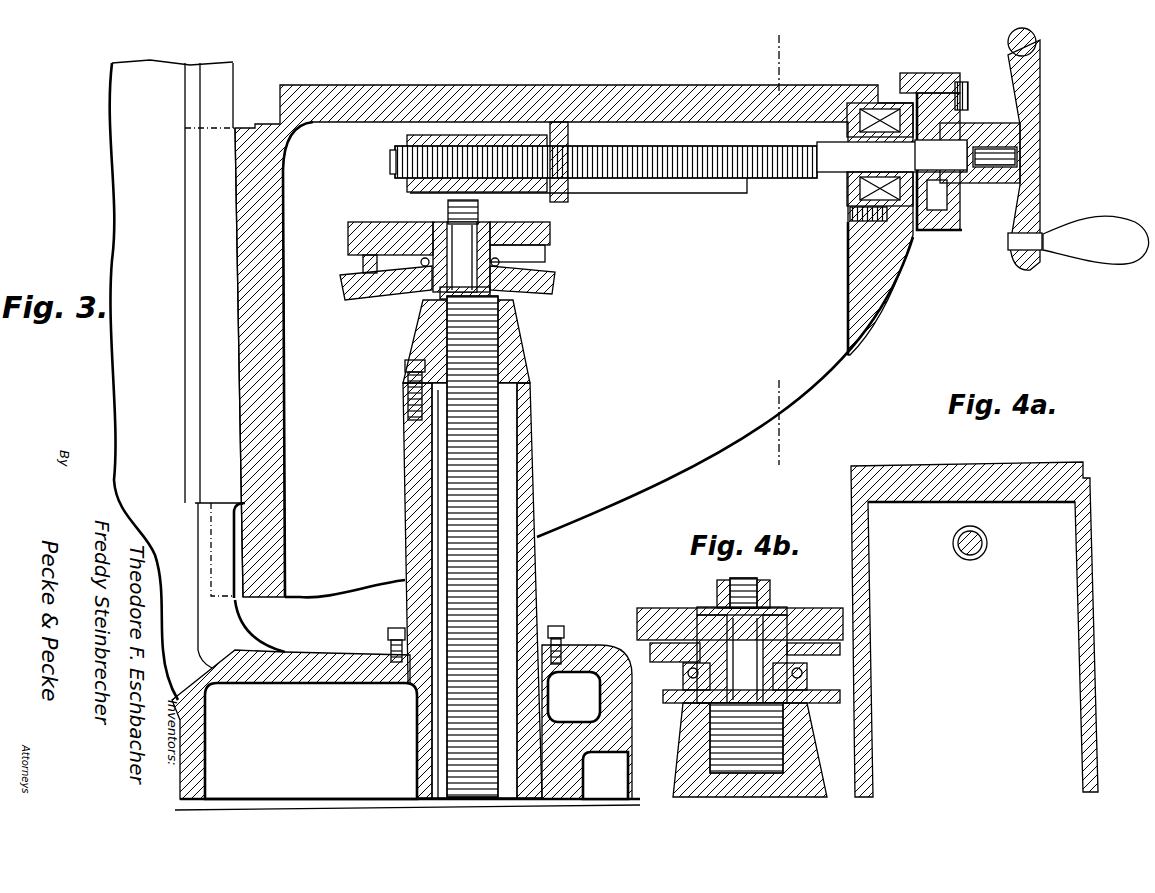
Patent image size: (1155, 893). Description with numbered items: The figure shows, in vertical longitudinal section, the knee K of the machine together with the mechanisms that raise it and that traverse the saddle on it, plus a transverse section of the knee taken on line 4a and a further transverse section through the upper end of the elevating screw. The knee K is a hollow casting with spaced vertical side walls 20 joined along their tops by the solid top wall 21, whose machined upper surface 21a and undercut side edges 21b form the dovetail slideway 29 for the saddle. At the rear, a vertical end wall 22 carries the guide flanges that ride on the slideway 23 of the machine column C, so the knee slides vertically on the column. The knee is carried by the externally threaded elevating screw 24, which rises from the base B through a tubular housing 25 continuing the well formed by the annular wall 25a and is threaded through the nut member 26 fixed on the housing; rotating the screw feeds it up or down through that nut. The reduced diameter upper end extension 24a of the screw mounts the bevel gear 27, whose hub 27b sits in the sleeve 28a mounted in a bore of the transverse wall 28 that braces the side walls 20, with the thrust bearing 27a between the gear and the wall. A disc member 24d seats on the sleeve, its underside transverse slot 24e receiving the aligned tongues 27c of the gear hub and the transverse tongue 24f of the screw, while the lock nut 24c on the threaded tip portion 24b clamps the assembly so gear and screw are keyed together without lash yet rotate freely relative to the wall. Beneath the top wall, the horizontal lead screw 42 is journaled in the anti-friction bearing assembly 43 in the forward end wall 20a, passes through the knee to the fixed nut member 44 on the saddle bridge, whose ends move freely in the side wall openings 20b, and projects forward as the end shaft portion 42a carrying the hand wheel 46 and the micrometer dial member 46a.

In FIG. 3, the side walls 20 is at (800, 395).
In FIG. 4A, the side walls 20 is at (1085, 562).
In FIG. 3, the forward end wall 20a is at (873, 325).
In FIG. 3, the side wall openings 20b is at (748, 200).
In FIG. 3, the top wall 21 is at (788, 95).
In FIG. 4A, the top wall 21 is at (980, 505).
In FIG. 3, the upper surface 21a is at (635, 88).
In FIG. 4A, the upper surface 21a is at (1004, 464).
In FIG. 3, the undercut side edges 21b is at (813, 482).
In FIG. 4A, the undercut side edges 21b is at (1086, 470).
In FIG. 4B, the undercut side edges 21b is at (795, 632).
In FIG. 3, the end wall 22 is at (290, 370).
In FIG. 3, the slideway 23 is at (213, 97).
In FIG. 3, the elevating screw 24 is at (482, 482).
In FIG. 4B, the elevating screw 24 is at (735, 768).
In FIG. 3, the reduced diameter upper end extension 24a is at (500, 262).
In FIG. 4B, the reduced diameter upper end extension 24a is at (805, 708).
In FIG. 3, the threaded tip portion 24b is at (447, 212).
In FIG. 4B, the threaded tip portion 24b is at (735, 580).
In FIG. 3, the lock nut 24c is at (440, 235).
In FIG. 4B, the lock nut 24c is at (745, 655).
In FIG. 3, the disc member 24d is at (540, 222).
In FIG. 4B, the disc member 24d is at (775, 612).
In FIG. 4B, the transverse slot 24e is at (725, 612).
In FIG. 3, the transverse tongue 24f is at (440, 294).
In FIG. 3, the tubular housing 25 is at (532, 514).
In FIG. 3, the annular wall 25a is at (417, 732).
In FIG. 3, the nut member 26 is at (512, 338).
In FIG. 3, the bevel gear 27 is at (540, 280).
In FIG. 4B, the bevel gear 27 is at (685, 708).
In FIG. 3, the thrust bearing 27a is at (400, 276).
In FIG. 3, the hub 27b is at (548, 245).
In FIG. 4B, the hub 27b is at (745, 652).
In FIG. 4B, the tongues 27c is at (700, 625).
In FIG. 3, the transverse wall 28 is at (548, 230).
In FIG. 3, the sleeve 28a is at (350, 252).
In FIG. 4B, the sleeve 28a is at (645, 618).
In FIG. 3, the slideway 29 is at (712, 92).
In FIG. 3, the lead screw 42 is at (760, 176).
In FIG. 3, the end shaft portion 42a is at (960, 185).
In FIG. 3, the anti-friction bearing assembly 43 is at (910, 225).
In FIG. 3, the nut member 44 is at (482, 150).
In FIG. 3, the hand wheel 46 is at (1030, 102).
In FIG. 3, the micrometer dial member 46a is at (928, 64).
In FIG. 3, the section line 4a— 4a is at (782, 40).
In FIG. 3, the base B is at (612, 690).
In FIG. 3, the machine column C is at (132, 360).
In FIG. 3, the knee K is at (700, 465).
In FIG. 4A, the knee K is at (1098, 682).